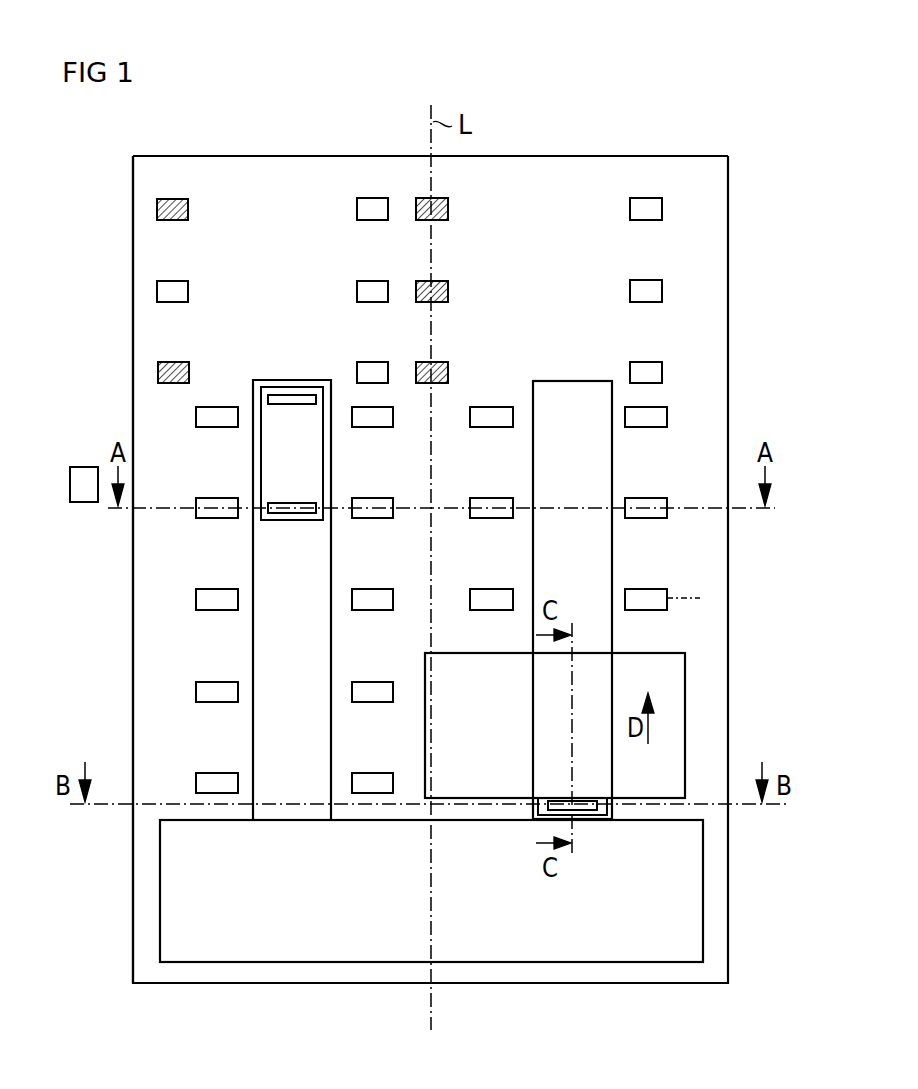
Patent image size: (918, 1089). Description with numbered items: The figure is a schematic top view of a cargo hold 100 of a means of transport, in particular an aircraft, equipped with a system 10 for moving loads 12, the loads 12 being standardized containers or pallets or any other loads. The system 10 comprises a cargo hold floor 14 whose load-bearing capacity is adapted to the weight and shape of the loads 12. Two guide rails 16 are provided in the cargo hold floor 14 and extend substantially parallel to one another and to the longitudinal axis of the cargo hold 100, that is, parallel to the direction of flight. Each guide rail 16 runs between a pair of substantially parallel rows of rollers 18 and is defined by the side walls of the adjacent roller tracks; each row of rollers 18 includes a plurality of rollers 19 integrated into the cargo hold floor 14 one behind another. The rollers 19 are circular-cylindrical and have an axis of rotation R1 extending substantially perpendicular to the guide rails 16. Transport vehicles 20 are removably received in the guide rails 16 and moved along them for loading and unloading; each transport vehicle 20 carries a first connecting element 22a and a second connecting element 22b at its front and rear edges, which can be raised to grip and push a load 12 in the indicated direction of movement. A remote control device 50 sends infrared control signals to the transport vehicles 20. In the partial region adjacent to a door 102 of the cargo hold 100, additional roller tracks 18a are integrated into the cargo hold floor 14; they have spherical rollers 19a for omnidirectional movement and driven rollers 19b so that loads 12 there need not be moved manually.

The cargo hold 100 is at (668, 128).
The door 102 is at (132, 256).
The cargo hold floor 14 is at (312, 156).
The guide rail 16 is at (556, 218).
The row of rollers 18 is at (215, 402).
The additional roller track 18a is at (671, 210).
The roller 19 is at (218, 428).
The spherical roller 19a is at (356, 209).
The driven roller 19b is at (189, 208).
The system for moving loads 10 is at (686, 395).
The load 12 is at (686, 700).
The transport vehicle 20 is at (290, 521).
The first connecting element 22a is at (293, 395).
The second connecting element 22b is at (293, 503).
The remote control device 50 is at (83, 504).
The axis of rotation R1 is at (683, 597).